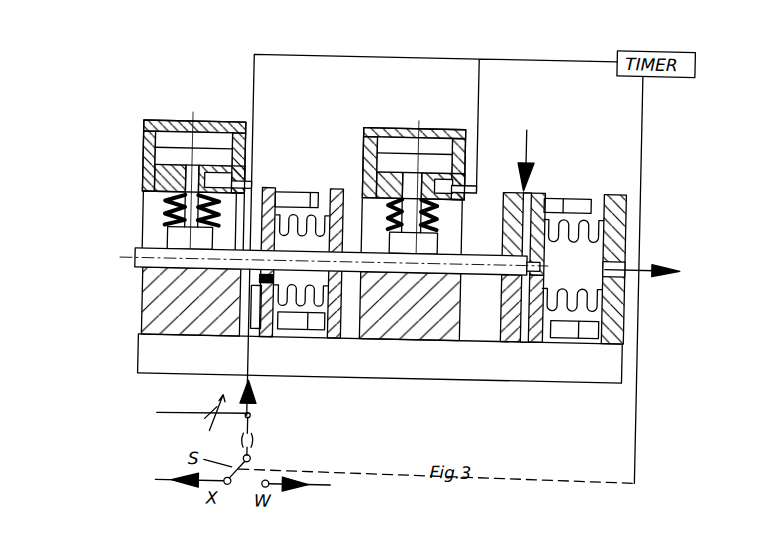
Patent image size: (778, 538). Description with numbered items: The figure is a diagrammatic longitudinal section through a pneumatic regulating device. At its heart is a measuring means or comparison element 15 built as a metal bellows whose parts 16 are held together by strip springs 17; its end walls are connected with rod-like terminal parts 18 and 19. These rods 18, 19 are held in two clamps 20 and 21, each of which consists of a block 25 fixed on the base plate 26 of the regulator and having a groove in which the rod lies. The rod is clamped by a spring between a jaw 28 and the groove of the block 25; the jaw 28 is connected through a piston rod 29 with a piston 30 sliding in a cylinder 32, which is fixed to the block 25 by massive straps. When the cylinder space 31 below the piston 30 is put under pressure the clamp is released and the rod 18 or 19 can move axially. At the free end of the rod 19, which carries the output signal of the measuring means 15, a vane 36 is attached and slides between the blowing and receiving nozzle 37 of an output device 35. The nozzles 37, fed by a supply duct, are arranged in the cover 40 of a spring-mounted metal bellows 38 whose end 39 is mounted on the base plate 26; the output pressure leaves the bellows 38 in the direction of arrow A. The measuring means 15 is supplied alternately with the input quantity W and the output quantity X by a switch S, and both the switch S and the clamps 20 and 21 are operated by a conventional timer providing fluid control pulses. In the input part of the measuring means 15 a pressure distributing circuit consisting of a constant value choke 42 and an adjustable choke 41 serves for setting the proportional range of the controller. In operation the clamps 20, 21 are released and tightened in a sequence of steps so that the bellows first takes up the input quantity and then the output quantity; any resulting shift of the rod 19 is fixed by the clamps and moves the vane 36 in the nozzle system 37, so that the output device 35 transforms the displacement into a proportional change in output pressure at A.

The measuring means or comparison element 15 is at (305, 255).
The bellows parts 16 is at (292, 217).
The strip springs 17 is at (331, 329).
The rod-like terminal part 18 is at (175, 262).
The rod-like terminal part 19 is at (420, 273).
The clamp 20 is at (158, 162).
The clamp 21 is at (421, 112).
The block 25 is at (179, 304).
The base plate 26 is at (177, 351).
The jaw 28 is at (183, 246).
The piston rod 29 is at (166, 207).
The piston 30 is at (147, 148).
The cylinder space 31 is at (171, 162).
The cylinder 32 is at (144, 128).
The output device 35 is at (552, 259).
The vane 36 is at (508, 265).
The blowing and receiving nozzle 37 is at (538, 319).
The spring mounted metal bellows 38 is at (578, 322).
The bellows end 39 is at (615, 325).
The cover 40 is at (551, 303).
The adjustable choke 41 is at (206, 397).
The constant value choke 42 is at (243, 446).